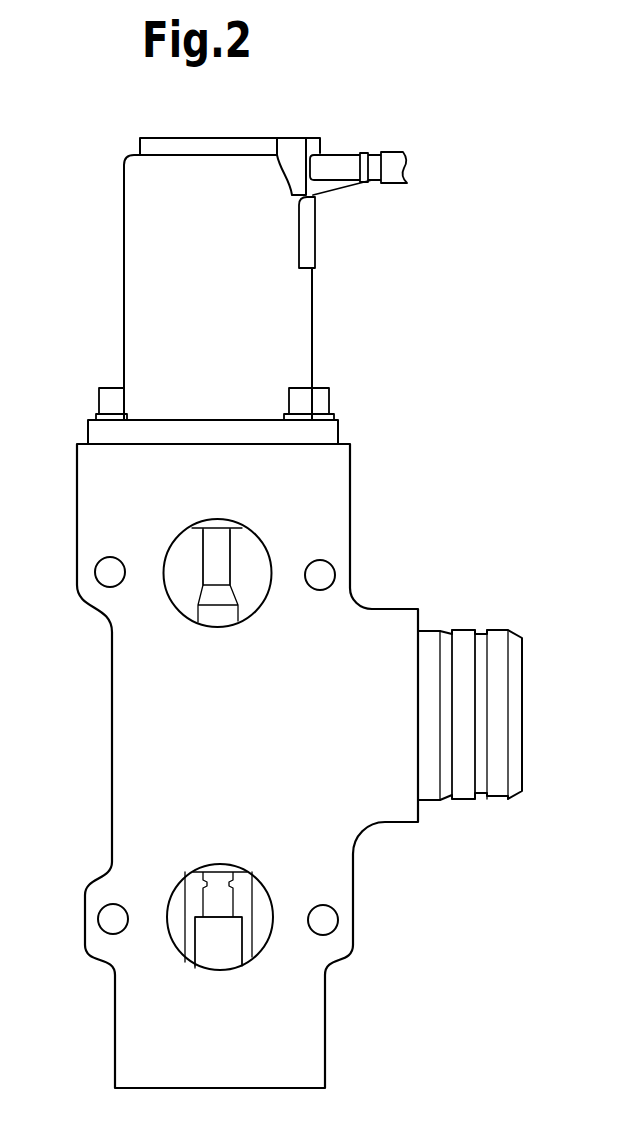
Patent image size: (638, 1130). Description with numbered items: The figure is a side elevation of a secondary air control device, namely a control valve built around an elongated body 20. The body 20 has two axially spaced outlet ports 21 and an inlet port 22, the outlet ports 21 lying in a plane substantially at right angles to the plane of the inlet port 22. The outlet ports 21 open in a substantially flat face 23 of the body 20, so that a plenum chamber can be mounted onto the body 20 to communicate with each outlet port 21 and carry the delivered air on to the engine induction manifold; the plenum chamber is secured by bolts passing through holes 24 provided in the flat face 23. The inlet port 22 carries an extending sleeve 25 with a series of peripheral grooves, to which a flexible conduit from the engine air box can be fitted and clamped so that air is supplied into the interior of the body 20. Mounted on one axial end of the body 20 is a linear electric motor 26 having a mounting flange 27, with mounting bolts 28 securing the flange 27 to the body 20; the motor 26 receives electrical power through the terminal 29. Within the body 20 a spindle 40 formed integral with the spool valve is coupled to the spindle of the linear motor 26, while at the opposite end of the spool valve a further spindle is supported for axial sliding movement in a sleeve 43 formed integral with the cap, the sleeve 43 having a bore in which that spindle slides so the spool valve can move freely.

The body 20 is at (118, 763).
The outlet ports 21 is at (255, 568).
The inlet port 22 is at (522, 683).
The flat face 23 is at (241, 766).
The holes 24 is at (97, 580).
The sleeve 25 is at (477, 800).
The linear electric motor 26 is at (133, 313).
The mounting flange 27 is at (182, 445).
The mounting bolts 28 is at (99, 400).
The terminal 29 is at (393, 183).
The spindle 40 is at (230, 547).
The sleeve 43 is at (227, 938).